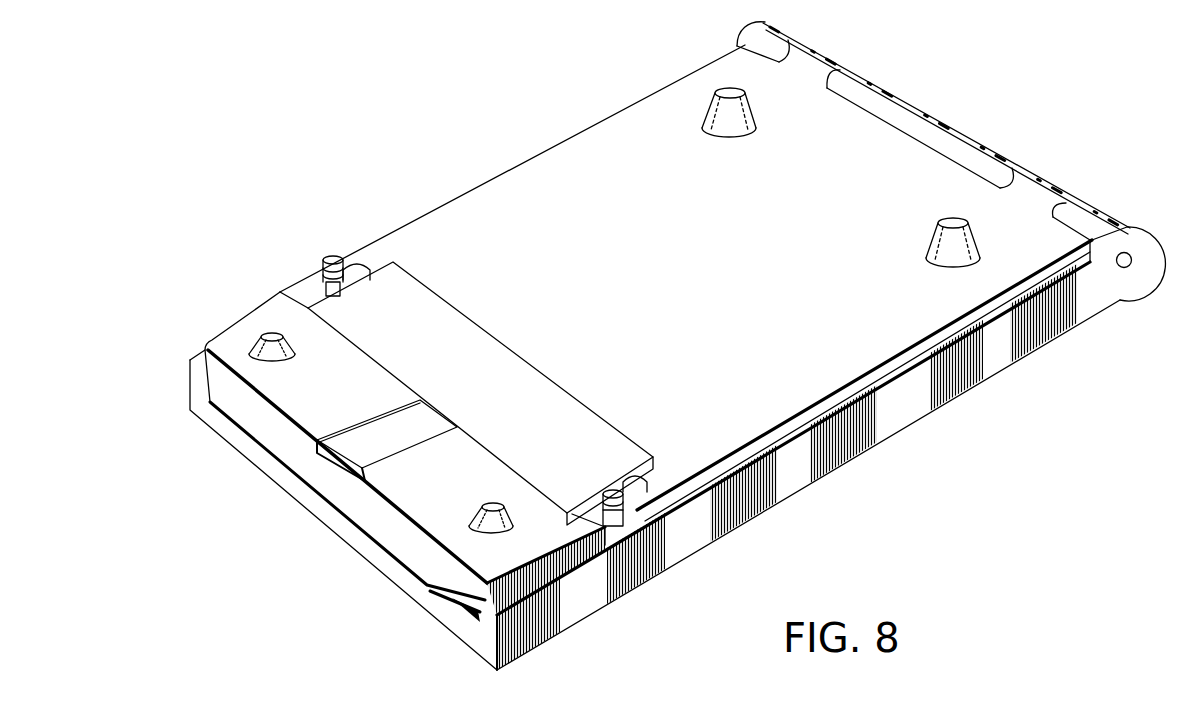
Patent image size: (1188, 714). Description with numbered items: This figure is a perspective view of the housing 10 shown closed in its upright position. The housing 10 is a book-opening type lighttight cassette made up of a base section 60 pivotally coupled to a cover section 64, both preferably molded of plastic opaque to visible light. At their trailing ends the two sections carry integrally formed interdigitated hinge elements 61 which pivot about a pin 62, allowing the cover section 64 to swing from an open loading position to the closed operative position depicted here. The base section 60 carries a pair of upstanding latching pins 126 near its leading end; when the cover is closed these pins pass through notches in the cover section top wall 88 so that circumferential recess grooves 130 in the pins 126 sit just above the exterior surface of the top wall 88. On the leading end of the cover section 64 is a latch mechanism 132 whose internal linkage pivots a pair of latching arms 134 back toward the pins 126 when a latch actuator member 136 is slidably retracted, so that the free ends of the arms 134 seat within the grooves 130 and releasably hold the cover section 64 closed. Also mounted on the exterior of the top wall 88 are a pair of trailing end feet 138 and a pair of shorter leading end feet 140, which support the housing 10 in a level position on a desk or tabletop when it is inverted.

The housing 10 is at (880, 472).
The base section 60 is at (712, 533).
The hinge elements 61 is at (1090, 217).
The pin 62 is at (1131, 262).
The cover section 64 is at (548, 567).
The cover section top wall 88 is at (548, 182).
The latching pins 126 is at (330, 255).
The circumferential recess grooves 130 is at (337, 286).
The latch mechanism 132 is at (473, 365).
The latching arms 134 is at (360, 270).
The latch actuator member 136 is at (383, 440).
The trailing end feet 138 is at (722, 90).
The leading end feet 140 is at (275, 336).